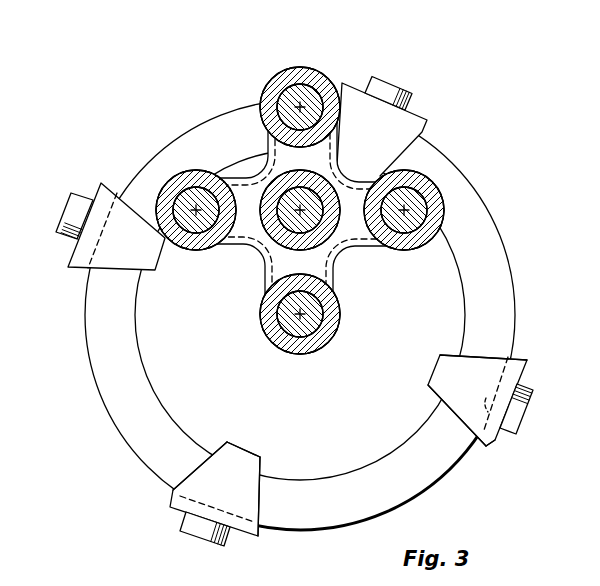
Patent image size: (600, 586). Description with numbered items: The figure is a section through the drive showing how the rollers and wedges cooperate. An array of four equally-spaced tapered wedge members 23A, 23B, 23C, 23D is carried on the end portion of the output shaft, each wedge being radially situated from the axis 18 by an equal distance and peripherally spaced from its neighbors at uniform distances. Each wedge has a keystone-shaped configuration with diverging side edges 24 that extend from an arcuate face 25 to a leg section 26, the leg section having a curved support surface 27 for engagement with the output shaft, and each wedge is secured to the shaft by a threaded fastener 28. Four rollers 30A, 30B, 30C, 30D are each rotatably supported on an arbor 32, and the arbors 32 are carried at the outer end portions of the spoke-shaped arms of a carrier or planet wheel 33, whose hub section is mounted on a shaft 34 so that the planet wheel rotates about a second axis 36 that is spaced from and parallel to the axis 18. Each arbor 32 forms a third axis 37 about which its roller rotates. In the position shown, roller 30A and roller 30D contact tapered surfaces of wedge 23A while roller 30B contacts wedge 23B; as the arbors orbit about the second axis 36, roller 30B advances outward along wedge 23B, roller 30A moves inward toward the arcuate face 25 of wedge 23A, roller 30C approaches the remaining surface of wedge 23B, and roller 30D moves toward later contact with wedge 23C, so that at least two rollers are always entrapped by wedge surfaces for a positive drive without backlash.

The axis 18 is at (262, 330).
The tapered wedge member 23A is at (411, 109).
The tapered wedge member 23B is at (95, 193).
The tapered wedge member 23C is at (166, 506).
The tapered wedge member 23D is at (523, 372).
The diverging side edges 24 is at (198, 468).
The arcuate face 25 is at (242, 448).
The leg section 26 is at (255, 537).
The curved support surface 27 is at (488, 438).
The threaded fastener 28 is at (190, 532).
The roller 30A is at (279, 72).
The roller 30B is at (219, 236).
The roller 30C is at (272, 346).
The roller 30D is at (440, 212).
The arbor 32 is at (278, 100).
The planet wheel 33 is at (266, 258).
The shaft 34 is at (303, 211).
The second axis 36 is at (302, 212).
The third axis 37 is at (311, 92).